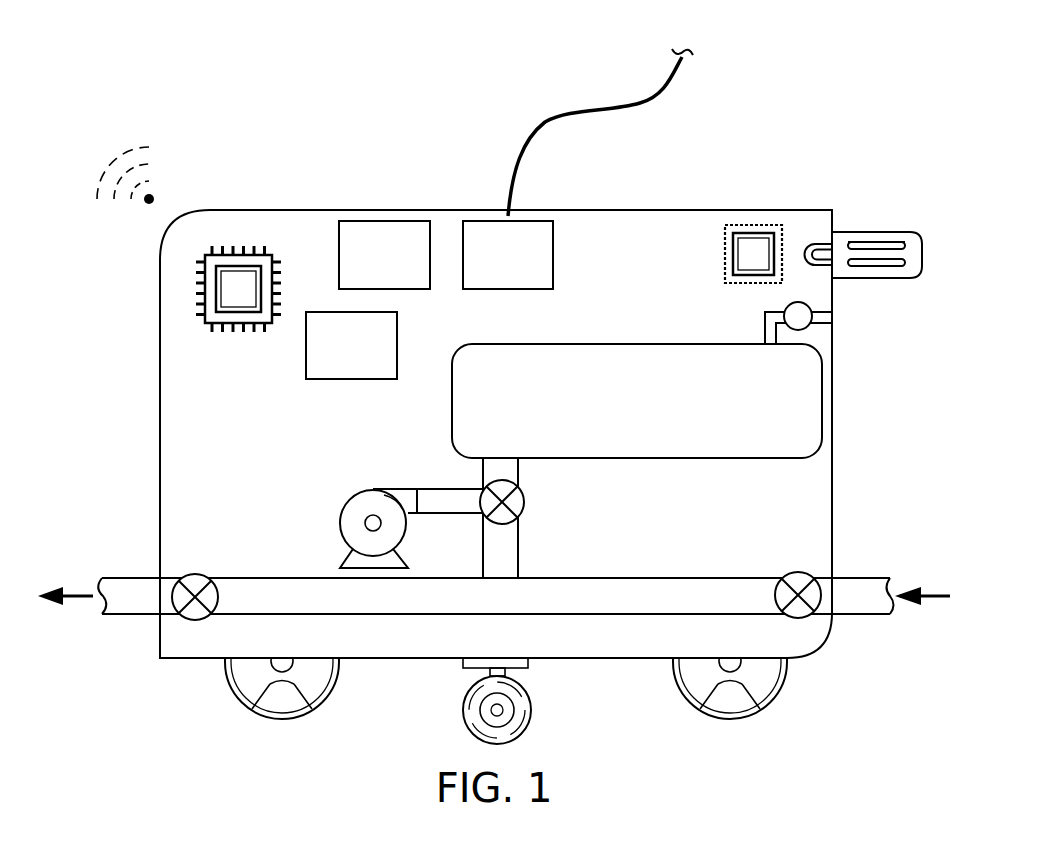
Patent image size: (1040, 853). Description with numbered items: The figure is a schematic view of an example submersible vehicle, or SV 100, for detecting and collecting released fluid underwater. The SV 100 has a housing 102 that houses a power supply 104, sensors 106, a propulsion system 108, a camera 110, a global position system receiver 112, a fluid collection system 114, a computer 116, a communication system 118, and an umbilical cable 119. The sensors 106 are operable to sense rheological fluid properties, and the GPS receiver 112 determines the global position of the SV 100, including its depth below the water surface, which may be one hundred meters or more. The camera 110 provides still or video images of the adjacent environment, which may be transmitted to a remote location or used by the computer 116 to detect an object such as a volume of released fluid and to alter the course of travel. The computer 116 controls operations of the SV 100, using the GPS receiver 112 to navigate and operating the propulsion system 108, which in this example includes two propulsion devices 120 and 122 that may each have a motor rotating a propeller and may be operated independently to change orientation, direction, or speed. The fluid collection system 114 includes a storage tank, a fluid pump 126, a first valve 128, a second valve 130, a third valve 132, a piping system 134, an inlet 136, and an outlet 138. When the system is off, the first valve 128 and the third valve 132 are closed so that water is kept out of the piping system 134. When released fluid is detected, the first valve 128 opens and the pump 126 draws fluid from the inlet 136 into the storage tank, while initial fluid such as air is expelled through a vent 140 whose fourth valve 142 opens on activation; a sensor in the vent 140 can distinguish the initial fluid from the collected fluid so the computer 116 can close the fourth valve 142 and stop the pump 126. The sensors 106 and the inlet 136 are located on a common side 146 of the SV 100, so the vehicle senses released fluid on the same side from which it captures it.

The submersible vehicle 100 is at (415, 74).
The housing 102 is at (698, 210).
The power supply 104 is at (529, 264).
The sensors 106 is at (725, 262).
The propulsion system 108 is at (686, 768).
The camera 110 is at (464, 707).
The global position system (GPS) receiver 112 is at (240, 332).
The fluid collection system 114 is at (362, 468).
The computer 116 is at (405, 264).
The communication system 118 is at (372, 355).
The umbilical cable 119 is at (545, 128).
The propulsion device 120 is at (270, 720).
The propulsion device 122 is at (745, 720).
The fluid pump 126 is at (340, 522).
The first valve 128 is at (792, 574).
The second valve 130 is at (524, 503).
The third valve 132 is at (196, 576).
The piping system 134 is at (640, 578).
The inlet 136 is at (865, 616).
The outlet 138 is at (116, 616).
The vent 140 is at (762, 328).
The fourth valve 142 is at (818, 332).
The common side 146 is at (836, 397).